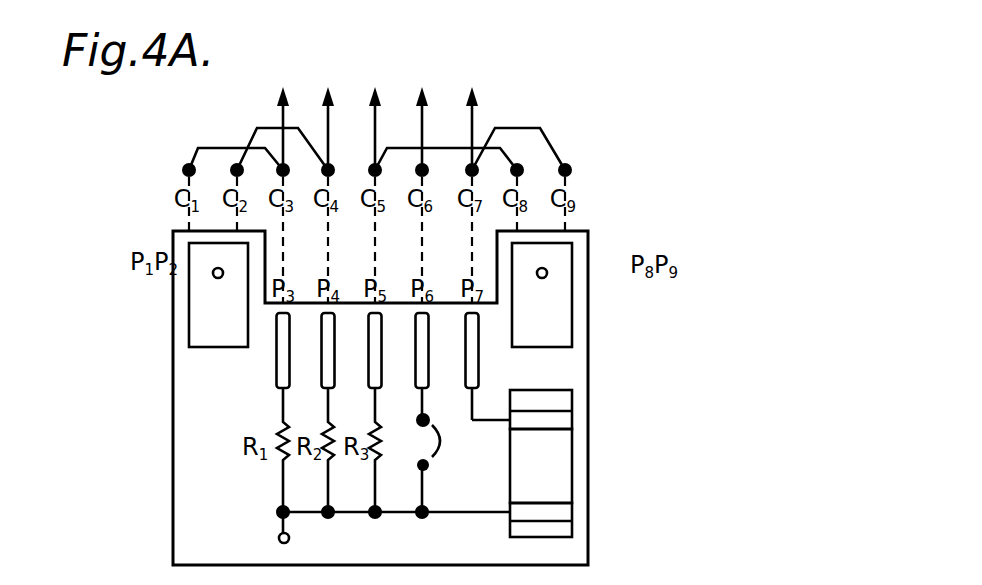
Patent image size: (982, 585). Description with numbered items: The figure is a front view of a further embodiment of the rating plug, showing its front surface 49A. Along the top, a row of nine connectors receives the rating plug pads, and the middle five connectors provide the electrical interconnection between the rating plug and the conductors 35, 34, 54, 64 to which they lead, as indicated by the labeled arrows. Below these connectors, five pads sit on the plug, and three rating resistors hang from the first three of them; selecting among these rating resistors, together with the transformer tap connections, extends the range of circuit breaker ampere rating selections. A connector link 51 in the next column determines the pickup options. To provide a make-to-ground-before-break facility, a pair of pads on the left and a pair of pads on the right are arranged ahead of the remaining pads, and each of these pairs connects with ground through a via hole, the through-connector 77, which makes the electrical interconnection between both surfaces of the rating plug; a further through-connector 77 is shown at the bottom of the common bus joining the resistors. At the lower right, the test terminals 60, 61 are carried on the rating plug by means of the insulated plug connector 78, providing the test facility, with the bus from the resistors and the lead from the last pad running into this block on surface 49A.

The conductor 35 is at (329, 114).
The conductor 34 is at (329, 114).
The conductor 54 is at (424, 114).
The conductor 64 is at (474, 114).
The connector link 51 is at (441, 441).
The test terminal 60 is at (572, 418).
The insulated plug connector 78 is at (560, 466).
The test terminal 61 is at (568, 514).
The through-connector 77 is at (218, 278).
The rating plug surface 49A is at (734, 460).